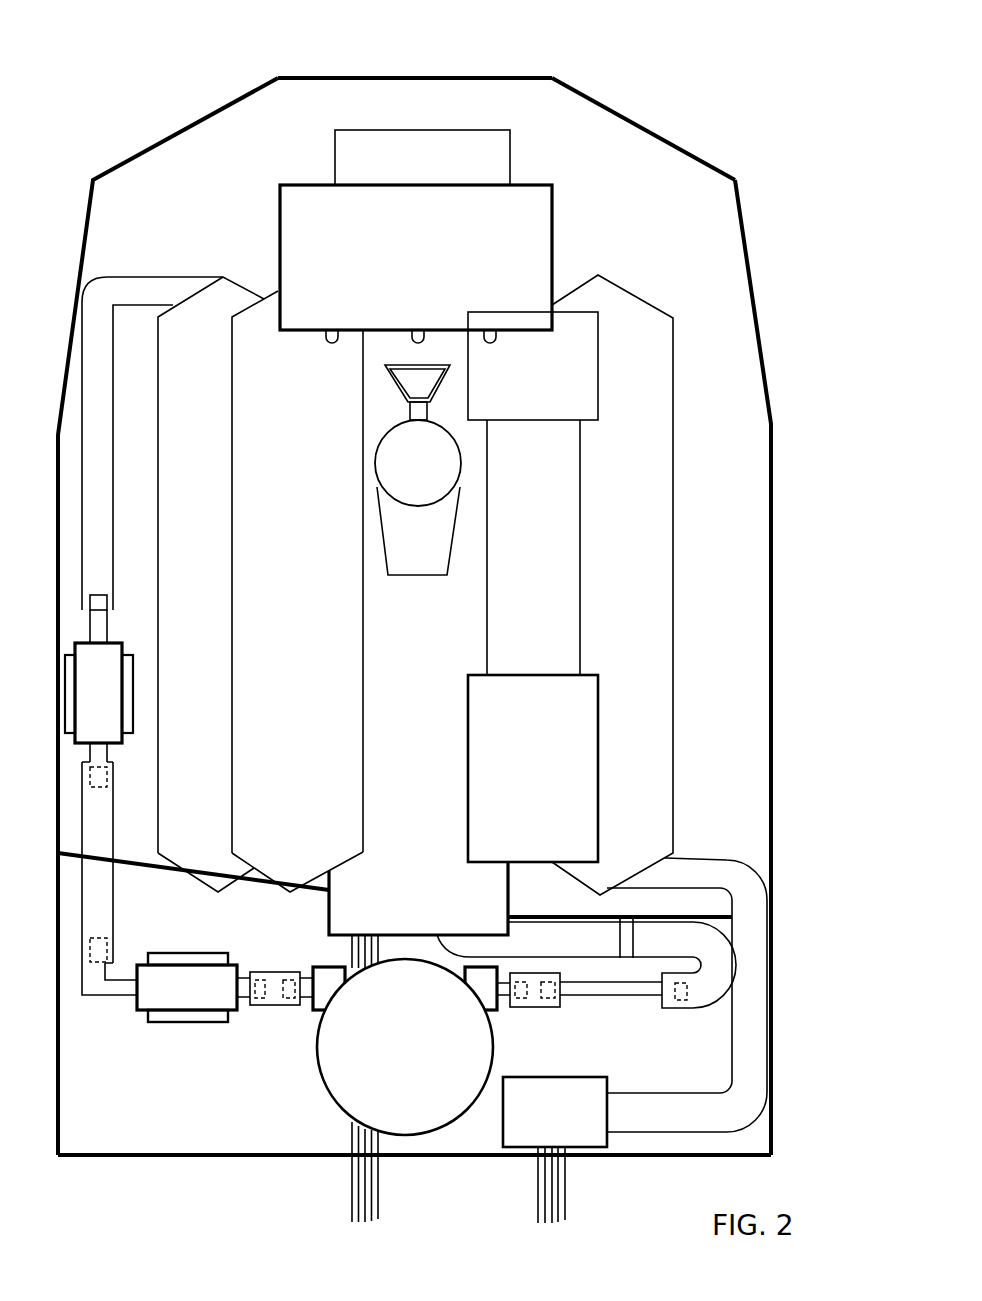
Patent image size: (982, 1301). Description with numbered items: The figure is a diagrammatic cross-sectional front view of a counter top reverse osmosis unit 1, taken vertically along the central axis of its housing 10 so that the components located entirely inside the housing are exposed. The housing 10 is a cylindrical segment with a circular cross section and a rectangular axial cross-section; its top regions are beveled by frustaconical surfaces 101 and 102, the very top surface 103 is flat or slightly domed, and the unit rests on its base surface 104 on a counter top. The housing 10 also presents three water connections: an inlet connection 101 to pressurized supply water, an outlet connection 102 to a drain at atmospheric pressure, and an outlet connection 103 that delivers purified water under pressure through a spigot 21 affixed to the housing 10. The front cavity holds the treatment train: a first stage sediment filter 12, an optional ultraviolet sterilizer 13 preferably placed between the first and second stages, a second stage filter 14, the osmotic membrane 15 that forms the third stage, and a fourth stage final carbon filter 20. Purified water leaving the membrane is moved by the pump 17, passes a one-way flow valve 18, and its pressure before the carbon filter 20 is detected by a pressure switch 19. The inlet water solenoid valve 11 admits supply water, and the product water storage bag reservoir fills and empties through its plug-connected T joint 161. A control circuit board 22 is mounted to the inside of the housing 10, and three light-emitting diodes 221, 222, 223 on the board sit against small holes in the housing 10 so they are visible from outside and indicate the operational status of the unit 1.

The counter top reverse osmosis unit 1 is at (718, 69).
The housing 10 is at (742, 556).
The frustaconical surface / inlet connection 101 is at (760, 341).
The frustaconical surface / outlet connection 102 is at (661, 139).
The top surface / outlet connection 103 is at (400, 77).
The base surface 104 is at (177, 1157).
The inlet water solenoid valve 11 is at (570, 1130).
The first stage sediment filter 12 is at (636, 653).
The ultraviolet (UV) sterilizer 13 is at (528, 643).
The second stage filter 14 is at (301, 642).
The osmotic membrane 15 is at (423, 647).
The "T" joint 161 is at (653, 992).
The pump 17 is at (420, 1070).
The one-way flow valve 18 is at (205, 1003).
The pressure switch 19 is at (113, 715).
The fourth stage final carbon filter 20 is at (208, 642).
The spigot 21 is at (434, 478).
The control circuit board 22 is at (435, 260).
The light-emitting diode 221 is at (332, 328).
The light-emitting diode 222 is at (418, 328).
The light-emitting diode 223 is at (490, 328).